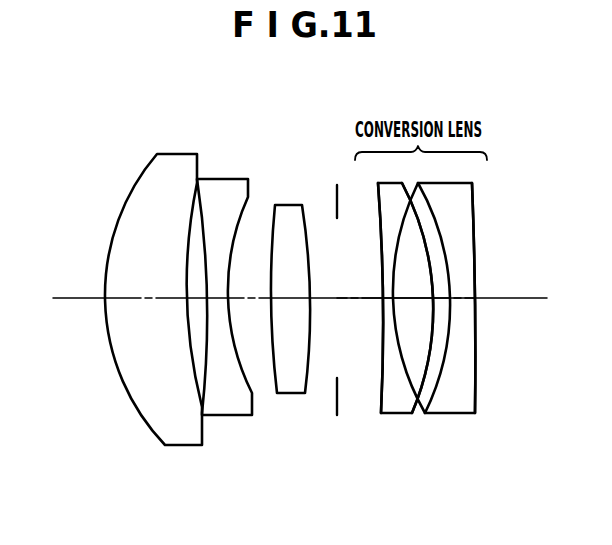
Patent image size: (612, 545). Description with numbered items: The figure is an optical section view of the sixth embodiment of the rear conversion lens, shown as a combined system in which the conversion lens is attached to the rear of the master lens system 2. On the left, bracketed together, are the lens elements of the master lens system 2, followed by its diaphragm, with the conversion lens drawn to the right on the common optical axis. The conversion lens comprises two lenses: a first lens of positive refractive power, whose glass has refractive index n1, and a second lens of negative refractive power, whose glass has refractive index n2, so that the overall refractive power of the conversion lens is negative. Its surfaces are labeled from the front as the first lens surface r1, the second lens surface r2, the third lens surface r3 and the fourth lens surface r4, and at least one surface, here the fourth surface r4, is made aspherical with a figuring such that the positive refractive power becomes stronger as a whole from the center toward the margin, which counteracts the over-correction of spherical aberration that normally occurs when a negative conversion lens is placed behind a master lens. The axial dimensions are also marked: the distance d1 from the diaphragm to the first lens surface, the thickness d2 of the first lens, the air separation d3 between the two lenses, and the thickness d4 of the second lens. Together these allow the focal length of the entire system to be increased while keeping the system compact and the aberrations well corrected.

The master lens system 2 is at (310, 141).
The refractive index of the first lens element n1 is at (405, 298).
The refractive index of the second lens element n2 is at (434, 298).
The first lens surface r1 is at (380, 412).
The second lens surface r2 is at (413, 414).
The third lens surface r3 is at (433, 397).
The fourth lens surface r4 is at (477, 395).
The distance from the diaphragm to the first lens surface d1 is at (360, 299).
The first lens thickness d2 is at (410, 299).
The air separation d3 is at (442, 299).
The second lens thickness d4 is at (462, 299).